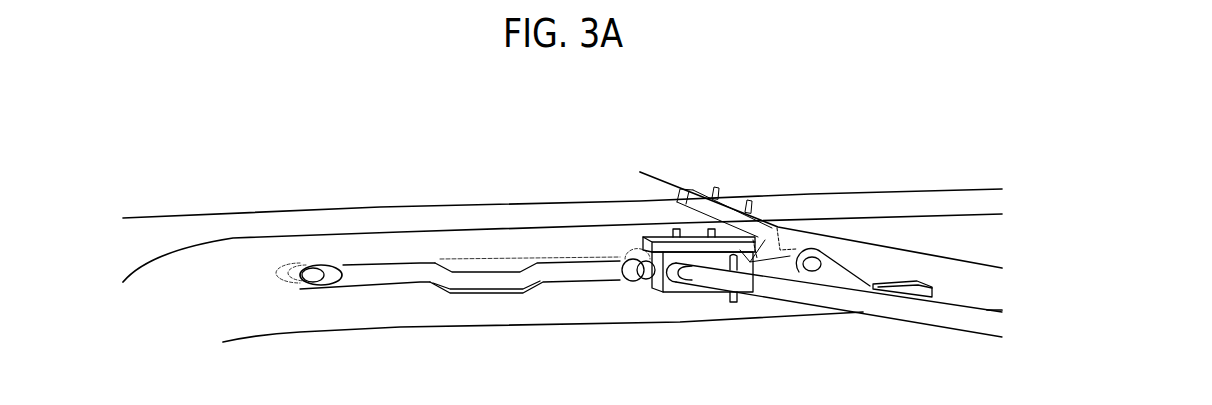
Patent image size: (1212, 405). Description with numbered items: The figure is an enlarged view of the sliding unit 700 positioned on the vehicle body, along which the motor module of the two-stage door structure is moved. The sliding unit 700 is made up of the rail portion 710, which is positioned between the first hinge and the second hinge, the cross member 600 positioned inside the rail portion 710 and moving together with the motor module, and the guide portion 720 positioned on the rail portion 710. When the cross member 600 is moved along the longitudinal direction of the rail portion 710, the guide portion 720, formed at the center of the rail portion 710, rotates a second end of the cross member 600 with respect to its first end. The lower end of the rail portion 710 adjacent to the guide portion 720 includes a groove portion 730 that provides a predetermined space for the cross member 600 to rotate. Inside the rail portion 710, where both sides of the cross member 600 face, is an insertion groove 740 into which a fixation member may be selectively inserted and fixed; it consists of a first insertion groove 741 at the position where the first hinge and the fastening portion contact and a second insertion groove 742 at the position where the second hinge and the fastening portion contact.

The sliding unit 700 is at (434, 199).
The rail portion 710 is at (374, 258).
The guide portion 720 is at (474, 268).
The groove portion 730 is at (475, 297).
The insertion groove 740 is at (506, 265).
The first insertion groove 741 is at (313, 274).
The second insertion groove 742 is at (628, 278).
The cross member 600 is at (773, 288).